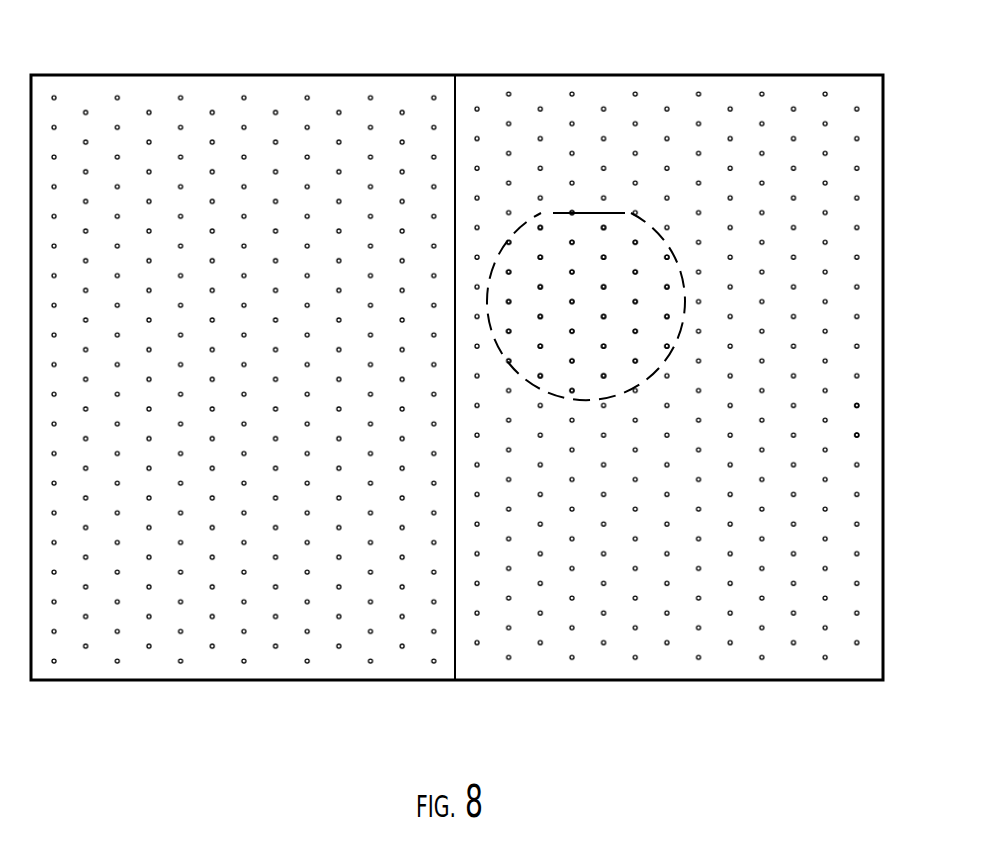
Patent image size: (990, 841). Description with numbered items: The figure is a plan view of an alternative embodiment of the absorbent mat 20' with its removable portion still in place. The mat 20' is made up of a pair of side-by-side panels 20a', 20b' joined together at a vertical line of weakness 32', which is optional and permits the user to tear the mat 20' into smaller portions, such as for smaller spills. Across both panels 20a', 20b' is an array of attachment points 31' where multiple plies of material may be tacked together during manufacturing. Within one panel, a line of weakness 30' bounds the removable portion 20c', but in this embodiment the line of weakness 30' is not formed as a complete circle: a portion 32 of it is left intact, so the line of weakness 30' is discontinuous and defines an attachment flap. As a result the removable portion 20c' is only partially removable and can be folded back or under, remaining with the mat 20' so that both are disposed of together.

The absorbent mat 20' is at (508, 371).
The panel 20a' is at (666, 407).
The panel 20b' is at (244, 409).
The removable portion 20c' is at (666, 338).
The line of weakness 30' is at (712, 305).
The attachment points 31' is at (917, 415).
The intact portion of the line of weakness 32 is at (677, 118).
The vertical line of weakness 32' is at (408, 398).